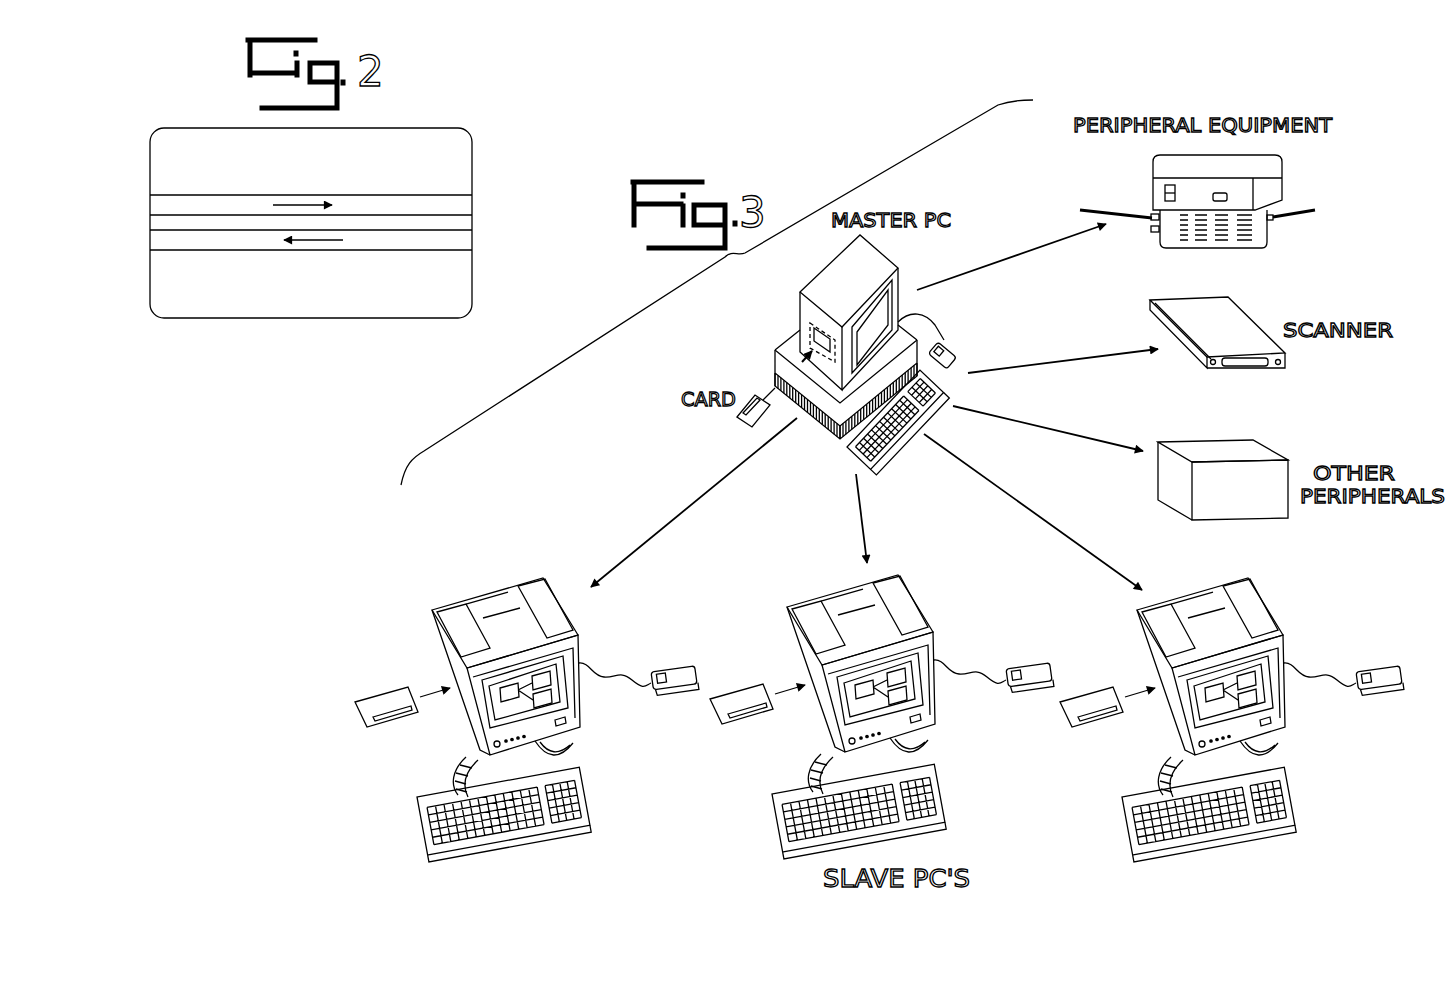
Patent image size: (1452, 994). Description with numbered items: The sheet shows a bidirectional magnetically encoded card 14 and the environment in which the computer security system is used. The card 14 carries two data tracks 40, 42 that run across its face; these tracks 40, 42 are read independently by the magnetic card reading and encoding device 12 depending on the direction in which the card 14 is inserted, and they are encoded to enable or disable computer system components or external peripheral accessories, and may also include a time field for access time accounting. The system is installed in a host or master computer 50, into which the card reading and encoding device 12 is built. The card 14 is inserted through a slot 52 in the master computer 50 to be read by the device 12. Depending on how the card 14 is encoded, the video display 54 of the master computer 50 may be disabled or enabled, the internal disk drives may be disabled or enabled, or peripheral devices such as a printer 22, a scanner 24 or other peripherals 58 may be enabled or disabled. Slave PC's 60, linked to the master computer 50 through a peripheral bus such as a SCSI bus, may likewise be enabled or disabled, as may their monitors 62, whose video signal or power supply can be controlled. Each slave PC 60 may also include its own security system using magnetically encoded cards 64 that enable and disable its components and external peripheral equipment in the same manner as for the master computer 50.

In FIG. 3, the magnetic card reading and encoding device 12 is at (808, 322).
In FIG. 2, the magnetically encoded card 14 is at (463, 160).
In FIG. 3, the magnetically encoded card 14 is at (757, 427).
In FIG. 3, the printer 22 is at (1282, 170).
In FIG. 3, the scanner 24 is at (1232, 318).
In FIG. 2, the data track 40 is at (160, 207).
In FIG. 2, the data track 42 is at (157, 239).
In FIG. 3, the host or master computer 50 is at (887, 265).
In FIG. 3, the slot 52 is at (812, 338).
In FIG. 3, the video display 54 is at (880, 320).
In FIG. 3, the other peripherals 58 is at (1260, 453).
In FIG. 3, the slave PC 60 is at (455, 622).
In FIG. 3, the monitor 62 is at (547, 693).
In FIG. 3, the magnetically encoded card 64 is at (380, 722).